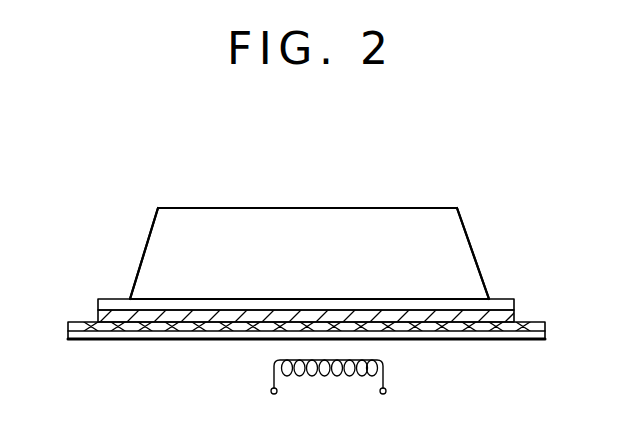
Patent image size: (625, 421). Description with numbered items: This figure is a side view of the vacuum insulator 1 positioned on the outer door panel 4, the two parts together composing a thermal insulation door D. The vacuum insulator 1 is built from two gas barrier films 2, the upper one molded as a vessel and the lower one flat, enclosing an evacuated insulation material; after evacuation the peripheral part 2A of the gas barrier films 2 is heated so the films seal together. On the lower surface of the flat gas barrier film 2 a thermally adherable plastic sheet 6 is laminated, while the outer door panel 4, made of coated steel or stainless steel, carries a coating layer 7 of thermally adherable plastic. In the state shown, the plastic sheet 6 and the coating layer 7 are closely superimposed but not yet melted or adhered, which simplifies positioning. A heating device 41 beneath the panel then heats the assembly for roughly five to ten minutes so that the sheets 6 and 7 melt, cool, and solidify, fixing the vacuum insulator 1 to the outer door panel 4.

The thermal insulation door D is at (390, 187).
The vacuum insulator 1 is at (268, 208).
The gas barrier film 2 is at (197, 223).
The peripheral part 2A is at (108, 298).
The thermally adherable plastic sheet 6 is at (98, 311).
The coating layer 7 is at (68, 326).
The outer door panel 4 is at (210, 341).
The heating device 41 is at (387, 372).